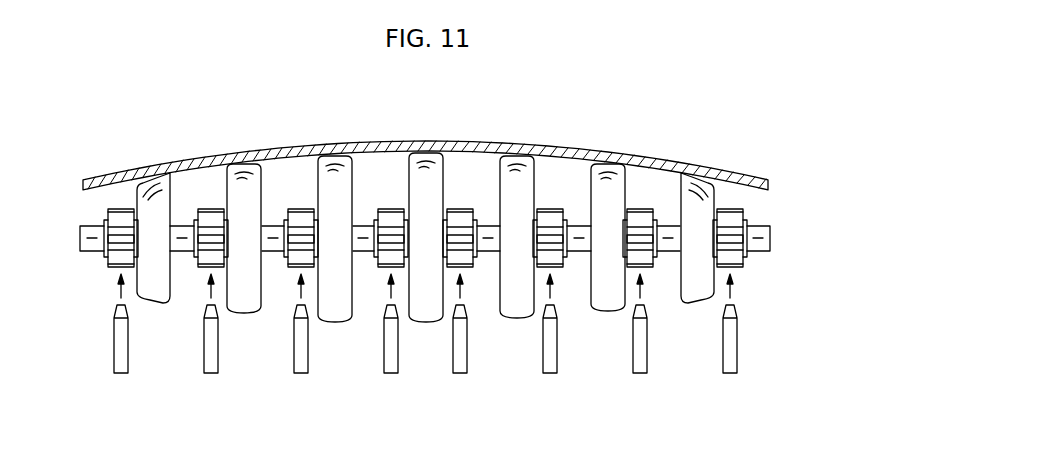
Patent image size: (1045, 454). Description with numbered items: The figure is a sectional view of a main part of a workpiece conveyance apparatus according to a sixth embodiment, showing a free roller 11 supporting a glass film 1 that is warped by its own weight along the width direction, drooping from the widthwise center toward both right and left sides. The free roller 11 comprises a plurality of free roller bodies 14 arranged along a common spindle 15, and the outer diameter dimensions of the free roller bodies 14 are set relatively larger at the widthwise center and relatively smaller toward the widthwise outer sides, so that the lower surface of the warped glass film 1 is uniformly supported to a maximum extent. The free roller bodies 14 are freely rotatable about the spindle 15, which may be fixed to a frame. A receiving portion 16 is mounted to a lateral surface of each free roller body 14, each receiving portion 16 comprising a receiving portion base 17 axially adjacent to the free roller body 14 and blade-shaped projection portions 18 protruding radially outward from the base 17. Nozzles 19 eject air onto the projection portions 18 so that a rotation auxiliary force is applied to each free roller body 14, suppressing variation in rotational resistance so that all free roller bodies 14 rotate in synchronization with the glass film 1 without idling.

The glass film 1 is at (375, 143).
The free roller 11 is at (456, 264).
The free roller body 14 is at (517, 313).
The spindle 15 is at (768, 246).
The receiving portion 16 is at (561, 268).
The receiving portion base 17 is at (563, 230).
The projection portion 18 is at (546, 208).
The nozzle 19 is at (557, 360).